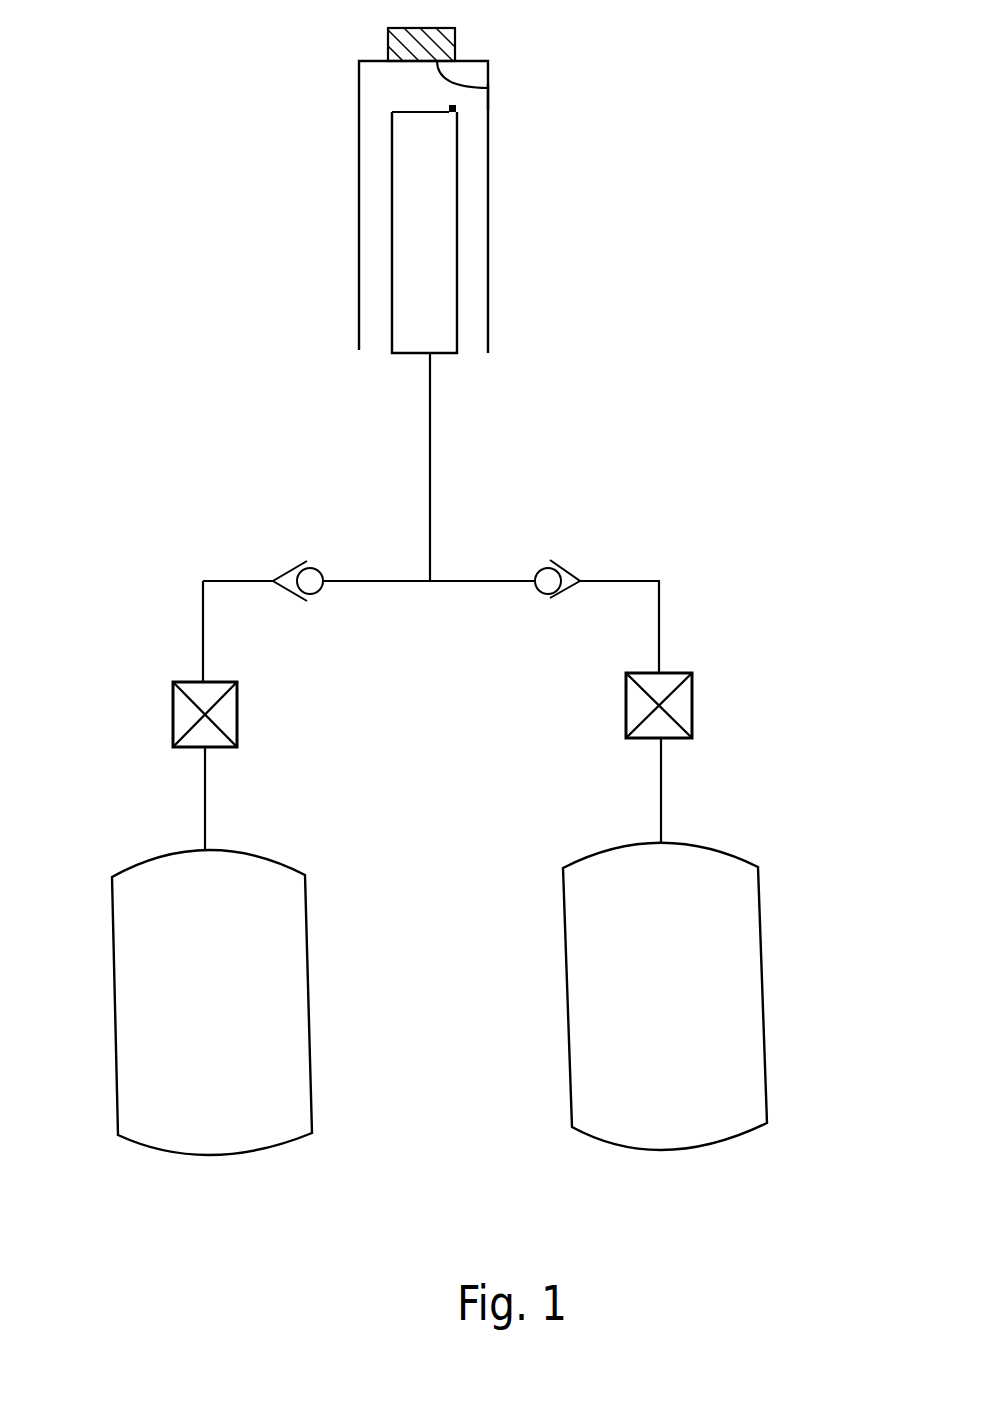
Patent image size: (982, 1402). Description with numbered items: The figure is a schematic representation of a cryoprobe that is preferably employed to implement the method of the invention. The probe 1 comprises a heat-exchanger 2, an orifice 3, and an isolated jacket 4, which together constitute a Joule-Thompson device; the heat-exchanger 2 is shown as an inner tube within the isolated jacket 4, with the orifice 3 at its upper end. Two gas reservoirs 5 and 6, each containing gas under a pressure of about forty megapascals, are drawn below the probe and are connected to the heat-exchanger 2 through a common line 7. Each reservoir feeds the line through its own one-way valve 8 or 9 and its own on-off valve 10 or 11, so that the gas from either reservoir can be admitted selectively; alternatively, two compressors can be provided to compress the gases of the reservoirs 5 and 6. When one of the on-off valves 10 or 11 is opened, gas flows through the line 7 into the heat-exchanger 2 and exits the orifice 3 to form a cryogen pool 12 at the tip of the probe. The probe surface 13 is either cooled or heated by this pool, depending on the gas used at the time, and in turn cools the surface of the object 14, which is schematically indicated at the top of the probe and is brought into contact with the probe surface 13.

The probe 1 is at (439, 181).
The heat-exchanger 2 is at (458, 233).
The orifice 3 is at (488, 96).
The isolated jacket 4 is at (358, 80).
The gas reservoir 5 is at (115, 1065).
The gas reservoir 6 is at (767, 1053).
The line 7 is at (431, 478).
The one-way valve 8 is at (291, 562).
The one-way valve 9 is at (571, 563).
The on-off valve 10 is at (173, 707).
The on-off valve 11 is at (692, 689).
The cryogen pool 12 is at (403, 87).
The probe surface 13 is at (452, 107).
The object 14 is at (388, 29).